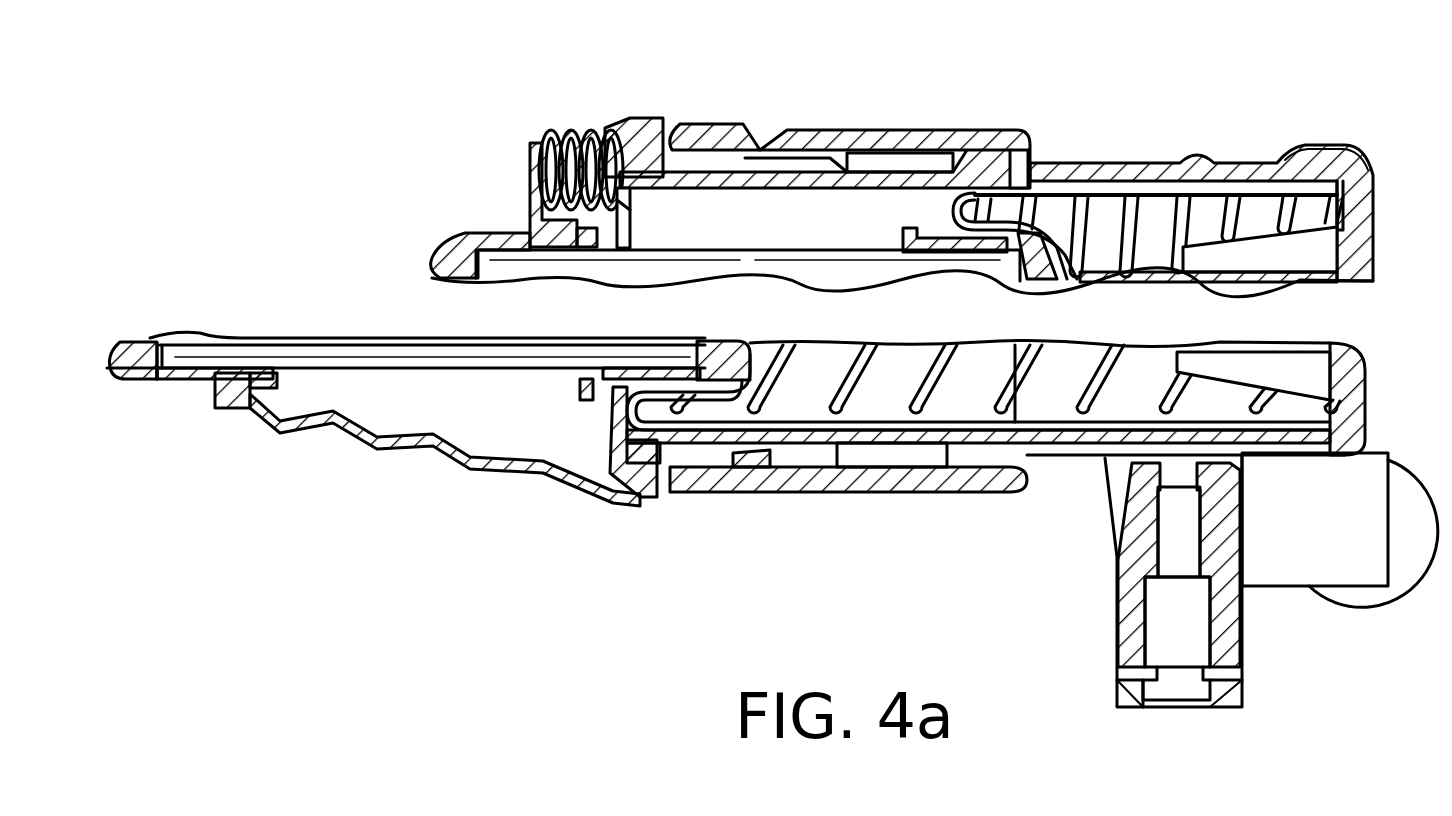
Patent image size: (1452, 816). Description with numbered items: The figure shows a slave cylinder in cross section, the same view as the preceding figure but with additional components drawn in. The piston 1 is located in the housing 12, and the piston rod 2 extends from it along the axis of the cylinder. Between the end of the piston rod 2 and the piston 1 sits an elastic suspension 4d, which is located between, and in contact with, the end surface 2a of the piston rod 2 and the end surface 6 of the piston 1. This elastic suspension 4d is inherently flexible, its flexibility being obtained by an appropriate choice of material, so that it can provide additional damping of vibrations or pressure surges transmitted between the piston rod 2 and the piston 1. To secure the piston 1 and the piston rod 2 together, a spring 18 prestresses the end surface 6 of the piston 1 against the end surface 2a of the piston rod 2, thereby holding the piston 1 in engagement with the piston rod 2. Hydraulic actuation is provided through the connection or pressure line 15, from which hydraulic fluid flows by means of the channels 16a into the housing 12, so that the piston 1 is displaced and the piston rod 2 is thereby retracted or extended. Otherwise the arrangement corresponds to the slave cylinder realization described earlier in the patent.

The piston 1 is at (1265, 168).
The piston rod 2 is at (378, 343).
The end surface of the piston rod 2a is at (1047, 282).
The elastic suspension 4d is at (726, 350).
The end surface of the piston 6 is at (1067, 268).
The housing 12 is at (1120, 163).
The connection or pressure line 15 is at (1230, 187).
The channels 16a is at (1342, 148).
The spring 18 is at (1058, 190).